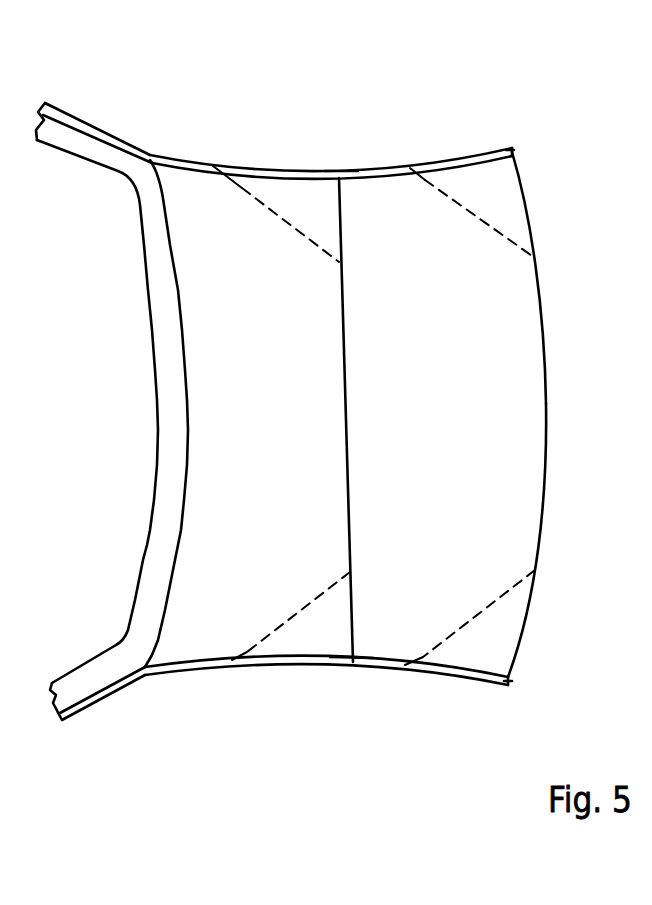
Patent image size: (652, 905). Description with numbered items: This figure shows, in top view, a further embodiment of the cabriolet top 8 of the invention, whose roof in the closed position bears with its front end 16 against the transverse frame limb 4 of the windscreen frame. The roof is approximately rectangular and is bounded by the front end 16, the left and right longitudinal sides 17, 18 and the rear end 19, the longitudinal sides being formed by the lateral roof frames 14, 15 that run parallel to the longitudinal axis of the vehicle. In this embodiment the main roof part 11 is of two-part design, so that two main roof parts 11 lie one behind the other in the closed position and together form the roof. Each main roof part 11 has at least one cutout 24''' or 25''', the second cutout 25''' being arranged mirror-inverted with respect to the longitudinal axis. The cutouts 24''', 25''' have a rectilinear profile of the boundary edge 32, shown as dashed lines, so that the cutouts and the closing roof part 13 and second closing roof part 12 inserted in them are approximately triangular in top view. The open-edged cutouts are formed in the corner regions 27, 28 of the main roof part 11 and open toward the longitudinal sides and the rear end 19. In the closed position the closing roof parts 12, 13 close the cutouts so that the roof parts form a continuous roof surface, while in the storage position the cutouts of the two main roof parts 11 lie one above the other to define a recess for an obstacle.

The cabriolet top 8 is at (358, 63).
The transverse frame limb 4 is at (162, 312).
The main roof part 11 is at (188, 186).
The second closing roof part 12 is at (503, 202).
The closing roof part 13 is at (493, 645).
The lateral roof frame 14 is at (330, 662).
The lateral roof frame 15 is at (358, 170).
The front end 16 is at (172, 276).
The left longitudinal side 17 is at (263, 665).
The right longitudinal side 18 is at (283, 170).
The rear end 19 is at (345, 398).
The cutout 24''' is at (385, 587).
The second cutout 25''' is at (388, 245).
The corner region 27 is at (511, 123).
The corner region 28 is at (507, 703).
The boundary edge 32 is at (243, 185).